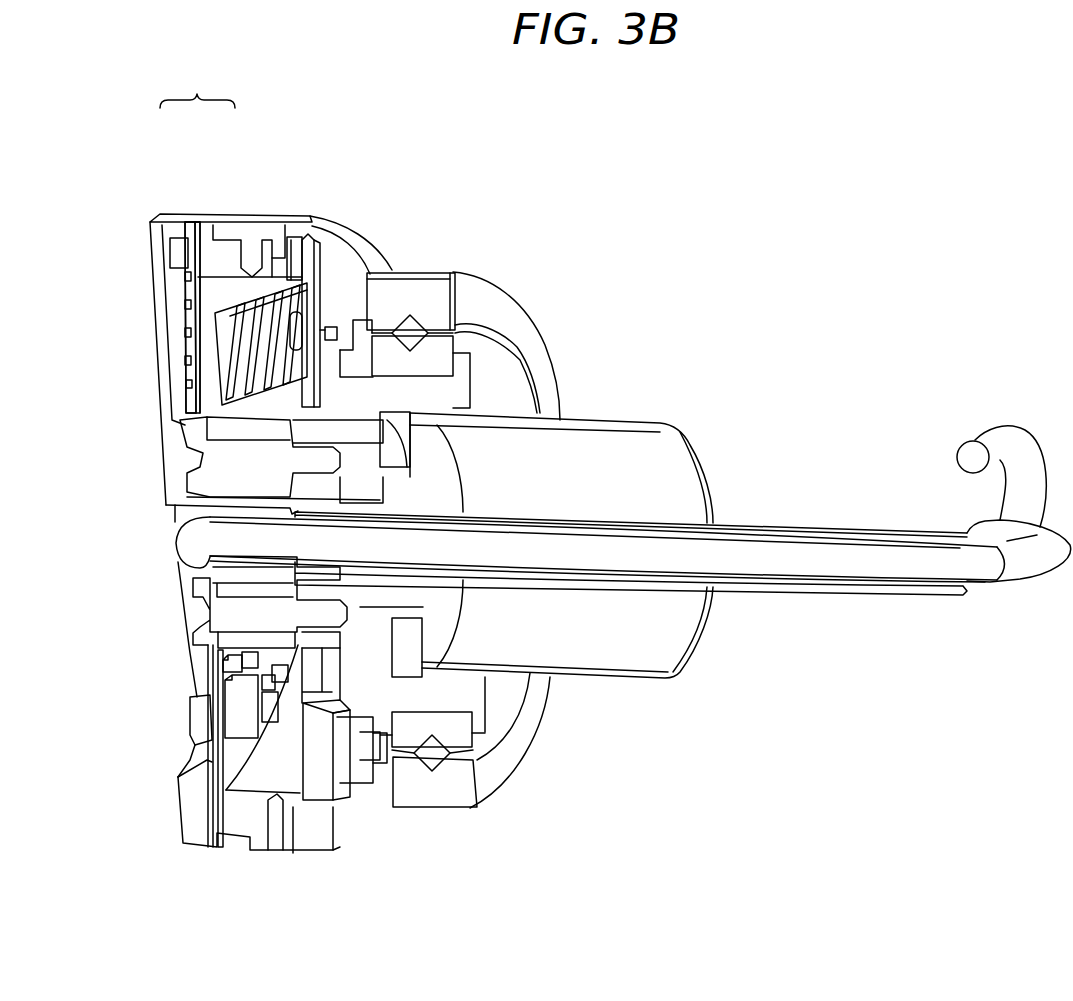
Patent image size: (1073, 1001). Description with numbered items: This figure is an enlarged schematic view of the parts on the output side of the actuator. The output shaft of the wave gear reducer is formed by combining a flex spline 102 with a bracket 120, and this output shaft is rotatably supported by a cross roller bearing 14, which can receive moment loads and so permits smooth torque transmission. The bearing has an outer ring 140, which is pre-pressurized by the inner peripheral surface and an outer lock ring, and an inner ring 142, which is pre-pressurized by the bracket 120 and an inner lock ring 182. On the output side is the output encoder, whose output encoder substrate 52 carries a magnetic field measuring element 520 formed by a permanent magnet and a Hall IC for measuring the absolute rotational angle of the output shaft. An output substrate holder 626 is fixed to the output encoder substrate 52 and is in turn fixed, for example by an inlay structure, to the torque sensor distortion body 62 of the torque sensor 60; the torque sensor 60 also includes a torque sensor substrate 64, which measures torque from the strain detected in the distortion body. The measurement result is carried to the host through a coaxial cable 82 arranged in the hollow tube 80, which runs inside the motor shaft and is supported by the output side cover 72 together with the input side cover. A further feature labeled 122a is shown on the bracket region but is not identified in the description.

The cross roller bearing 14 is at (520, 293).
The output encoder substrate 52 is at (358, 267).
The torque sensor 60 is at (197, 241).
The torque sensor distortion body 62 is at (228, 206).
The torque sensor substrate 64 is at (207, 206).
The output side cover 72 is at (160, 201).
The hollow tube 80 is at (815, 592).
The coaxial cable 82 is at (985, 432).
The flex spline 102 is at (612, 678).
The bracket 120 is at (465, 388).
The support plate 122a is at (322, 395).
The outer ring 140 is at (430, 295).
The inner ring 142 is at (447, 355).
The inner lock ring 182 is at (395, 757).
The magnetic field measuring element 520 is at (320, 787).
The output substrate holder 626 is at (283, 222).